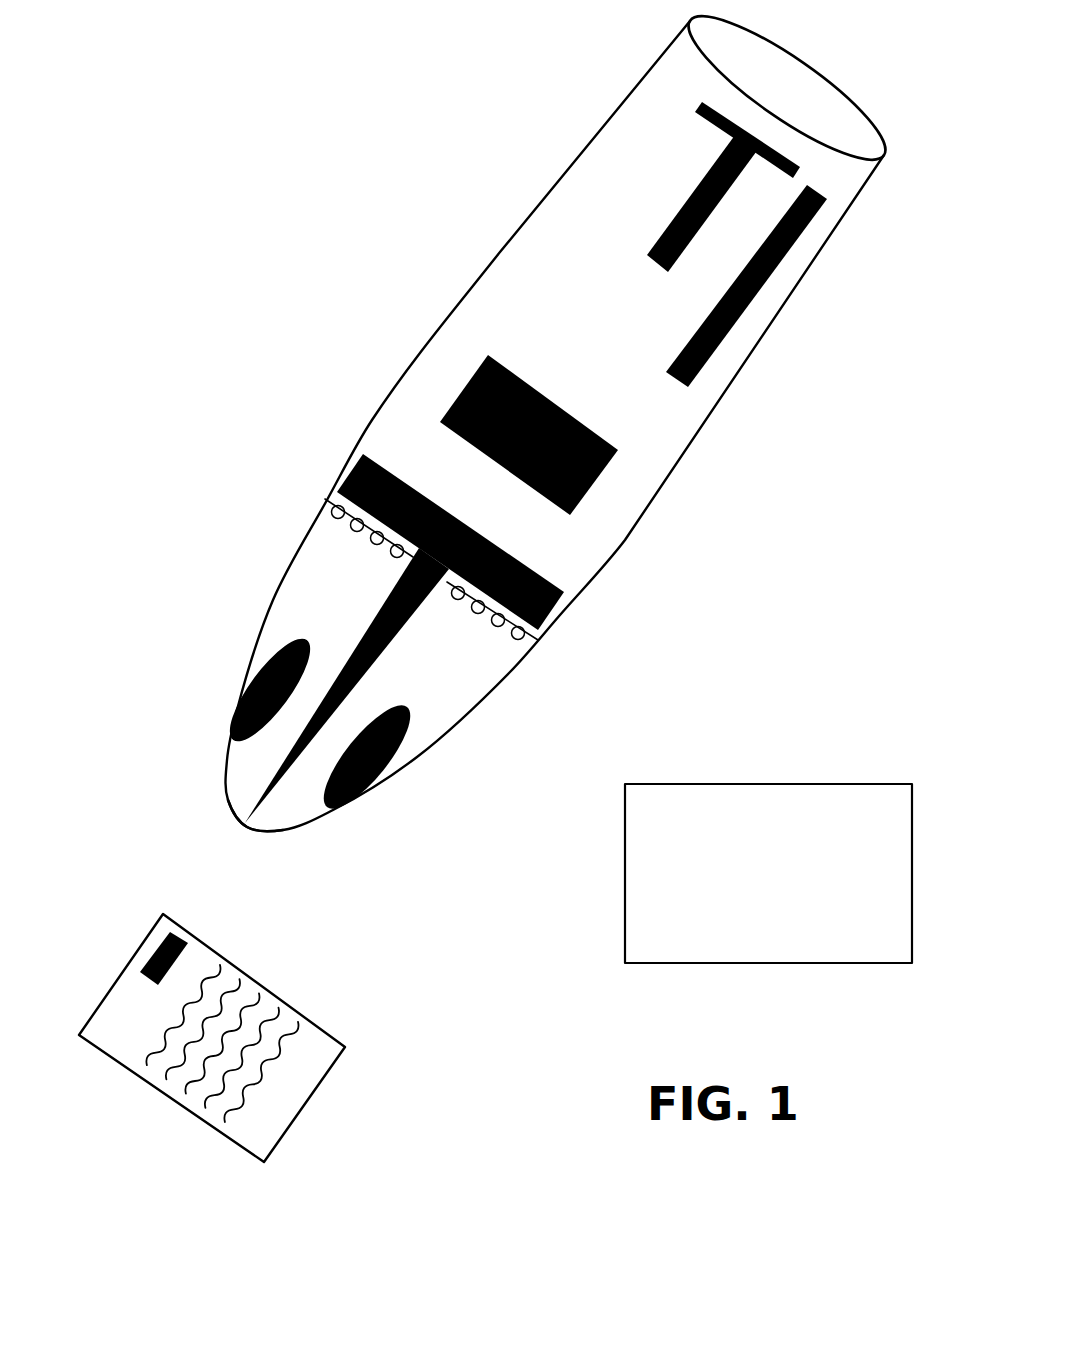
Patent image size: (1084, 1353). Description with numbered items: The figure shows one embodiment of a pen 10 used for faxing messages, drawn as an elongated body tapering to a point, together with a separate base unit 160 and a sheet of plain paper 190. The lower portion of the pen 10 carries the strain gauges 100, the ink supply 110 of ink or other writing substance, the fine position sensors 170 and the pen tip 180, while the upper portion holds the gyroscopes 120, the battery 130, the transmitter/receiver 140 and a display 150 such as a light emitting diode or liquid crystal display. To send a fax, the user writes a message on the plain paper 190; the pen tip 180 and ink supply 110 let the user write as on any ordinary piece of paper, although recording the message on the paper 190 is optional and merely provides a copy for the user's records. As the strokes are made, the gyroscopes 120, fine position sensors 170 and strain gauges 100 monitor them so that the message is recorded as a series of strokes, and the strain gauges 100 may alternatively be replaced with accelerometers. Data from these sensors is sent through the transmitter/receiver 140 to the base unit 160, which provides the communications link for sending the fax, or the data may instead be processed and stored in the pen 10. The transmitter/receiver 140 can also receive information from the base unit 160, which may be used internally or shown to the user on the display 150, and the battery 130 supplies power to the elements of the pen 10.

The pen 10 is at (477, 280).
The strain gauges 100 is at (538, 640).
The ink supply 110 is at (562, 605).
The gyroscopes 120 is at (593, 485).
The battery 130 is at (728, 337).
The transmitter/receiver 140 is at (693, 193).
The display 150 is at (807, 78).
The base unit 160 is at (903, 961).
The fine position sensors 170 is at (235, 707).
The pen tip 180 is at (240, 832).
The plain paper 190 is at (332, 1032).